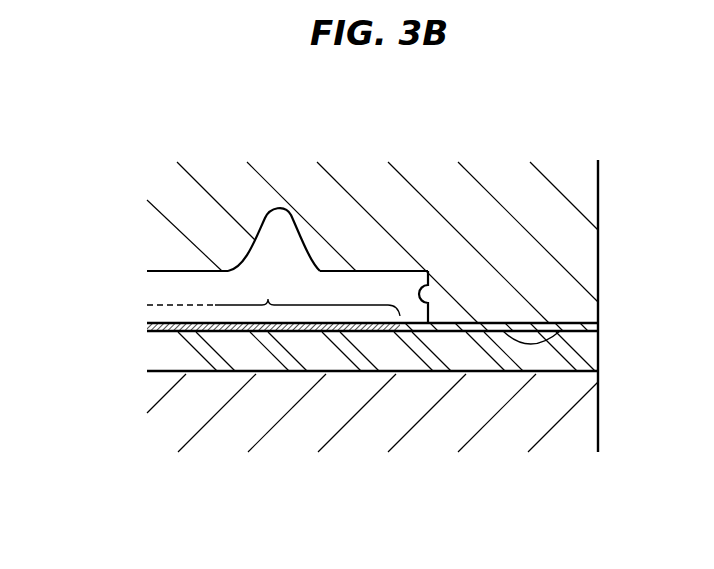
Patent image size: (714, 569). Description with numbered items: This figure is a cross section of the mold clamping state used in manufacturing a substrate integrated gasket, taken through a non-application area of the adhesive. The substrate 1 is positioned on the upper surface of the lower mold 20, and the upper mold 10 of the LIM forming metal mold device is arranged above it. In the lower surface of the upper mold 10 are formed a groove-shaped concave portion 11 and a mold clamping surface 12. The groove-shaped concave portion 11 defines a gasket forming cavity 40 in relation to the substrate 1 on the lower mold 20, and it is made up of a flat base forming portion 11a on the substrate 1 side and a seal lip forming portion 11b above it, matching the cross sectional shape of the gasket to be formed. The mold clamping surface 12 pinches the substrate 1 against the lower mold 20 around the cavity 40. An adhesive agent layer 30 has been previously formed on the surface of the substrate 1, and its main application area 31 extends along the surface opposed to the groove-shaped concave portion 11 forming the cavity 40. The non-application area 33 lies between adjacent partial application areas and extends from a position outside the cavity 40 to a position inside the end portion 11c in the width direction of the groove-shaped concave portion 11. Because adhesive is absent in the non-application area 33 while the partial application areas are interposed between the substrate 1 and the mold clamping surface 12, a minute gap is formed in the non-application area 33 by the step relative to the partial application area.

The substrate 1 is at (168, 352).
The upper mold 10 is at (184, 182).
The groove-shaped concave portion 11 is at (291, 222).
The flat base forming portion 11a is at (372, 278).
The seal lip forming portion 11b is at (268, 211).
The end portion 11c is at (431, 289).
The mold clamping surface 12 is at (573, 321).
The lower mold 20 is at (443, 428).
The adhesive agent layer 30 is at (143, 320).
The main application area 31 is at (273, 294).
The non-application area 33 is at (473, 320).
The gasket forming cavity 40 is at (248, 250).